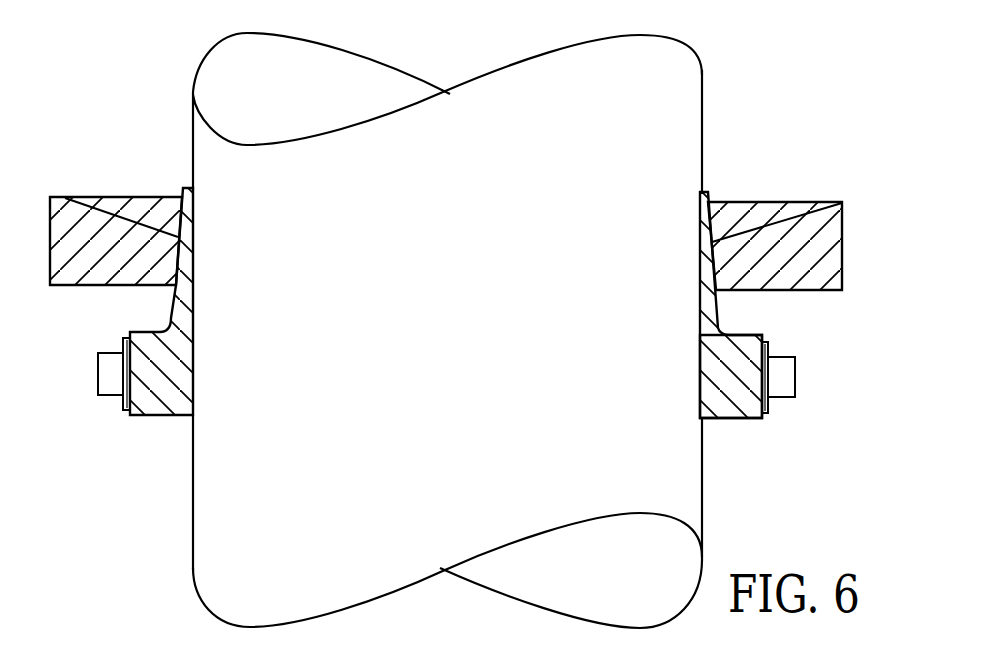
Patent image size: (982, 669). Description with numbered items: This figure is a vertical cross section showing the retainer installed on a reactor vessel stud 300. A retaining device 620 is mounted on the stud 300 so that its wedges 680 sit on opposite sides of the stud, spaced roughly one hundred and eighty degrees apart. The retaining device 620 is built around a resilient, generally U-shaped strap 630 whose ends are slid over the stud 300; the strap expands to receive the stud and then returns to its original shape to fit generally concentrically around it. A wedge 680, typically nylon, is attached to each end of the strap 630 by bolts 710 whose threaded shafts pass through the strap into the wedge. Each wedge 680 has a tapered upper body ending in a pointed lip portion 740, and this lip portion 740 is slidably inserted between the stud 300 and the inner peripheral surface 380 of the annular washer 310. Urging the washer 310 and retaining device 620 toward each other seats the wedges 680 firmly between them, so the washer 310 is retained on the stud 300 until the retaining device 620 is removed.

The stud 300 is at (717, 103).
The washer 310 is at (843, 228).
The inner peripheral surface 380 is at (181, 226).
The lip portion 740 is at (706, 192).
The wedge 680 is at (723, 422).
The retaining device 620 is at (763, 335).
The bolt 710 is at (795, 381).
The strap 630 is at (772, 421).